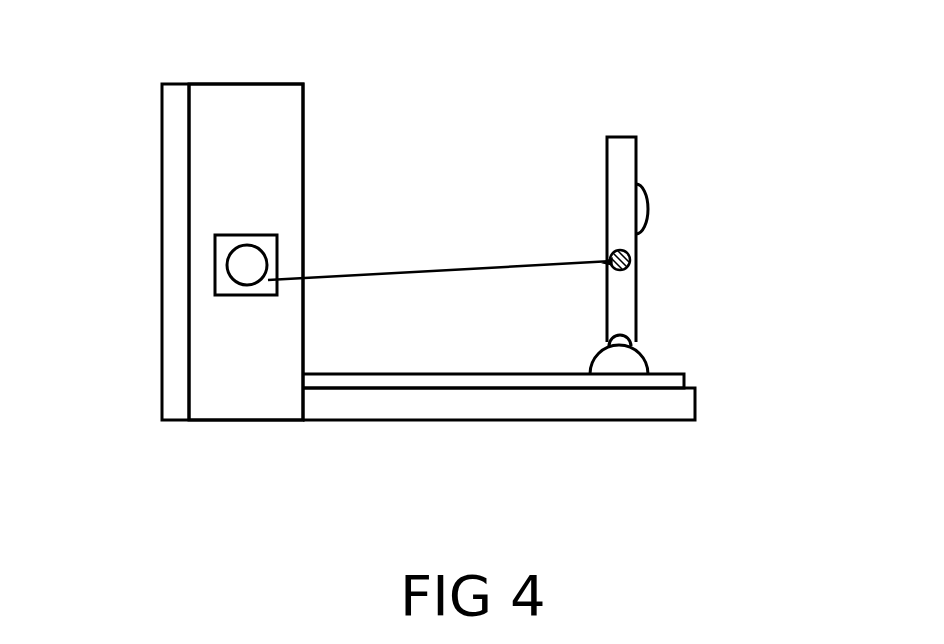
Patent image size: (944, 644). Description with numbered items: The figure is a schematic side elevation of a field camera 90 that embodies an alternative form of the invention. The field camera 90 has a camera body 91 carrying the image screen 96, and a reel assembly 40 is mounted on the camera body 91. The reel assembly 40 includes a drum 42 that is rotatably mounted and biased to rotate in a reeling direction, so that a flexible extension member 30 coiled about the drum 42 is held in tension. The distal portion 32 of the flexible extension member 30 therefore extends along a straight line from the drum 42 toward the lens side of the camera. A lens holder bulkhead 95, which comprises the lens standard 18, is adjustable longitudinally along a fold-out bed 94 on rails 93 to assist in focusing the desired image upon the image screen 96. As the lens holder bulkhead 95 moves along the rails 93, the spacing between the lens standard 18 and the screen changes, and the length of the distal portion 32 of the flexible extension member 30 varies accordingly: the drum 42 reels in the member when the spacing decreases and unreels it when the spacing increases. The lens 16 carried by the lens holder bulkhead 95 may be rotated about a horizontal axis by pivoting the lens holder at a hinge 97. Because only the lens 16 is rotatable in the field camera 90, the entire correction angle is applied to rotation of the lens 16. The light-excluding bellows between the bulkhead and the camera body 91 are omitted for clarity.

The field camera 90 is at (528, 143).
The image screen 96 is at (189, 210).
The camera body 91 is at (265, 385).
The drum 42 is at (249, 262).
The reel assembly 40 is at (214, 276).
The flexible extension member 30 is at (340, 275).
The distal portion 32 is at (569, 260).
The lens standard 18 is at (615, 158).
The lens 16 is at (647, 207).
The lens holder bulkhead 95 is at (620, 315).
The hinge 97 is at (620, 345).
The rails 93 is at (378, 382).
The fold-out bed 94 is at (567, 400).